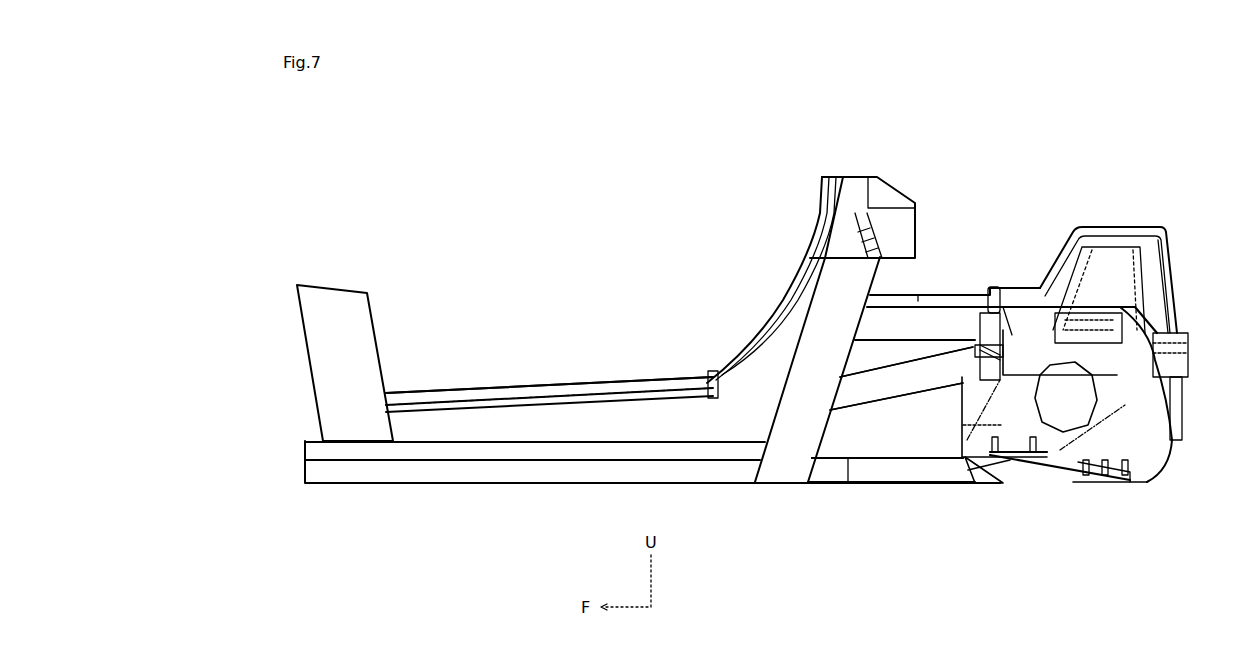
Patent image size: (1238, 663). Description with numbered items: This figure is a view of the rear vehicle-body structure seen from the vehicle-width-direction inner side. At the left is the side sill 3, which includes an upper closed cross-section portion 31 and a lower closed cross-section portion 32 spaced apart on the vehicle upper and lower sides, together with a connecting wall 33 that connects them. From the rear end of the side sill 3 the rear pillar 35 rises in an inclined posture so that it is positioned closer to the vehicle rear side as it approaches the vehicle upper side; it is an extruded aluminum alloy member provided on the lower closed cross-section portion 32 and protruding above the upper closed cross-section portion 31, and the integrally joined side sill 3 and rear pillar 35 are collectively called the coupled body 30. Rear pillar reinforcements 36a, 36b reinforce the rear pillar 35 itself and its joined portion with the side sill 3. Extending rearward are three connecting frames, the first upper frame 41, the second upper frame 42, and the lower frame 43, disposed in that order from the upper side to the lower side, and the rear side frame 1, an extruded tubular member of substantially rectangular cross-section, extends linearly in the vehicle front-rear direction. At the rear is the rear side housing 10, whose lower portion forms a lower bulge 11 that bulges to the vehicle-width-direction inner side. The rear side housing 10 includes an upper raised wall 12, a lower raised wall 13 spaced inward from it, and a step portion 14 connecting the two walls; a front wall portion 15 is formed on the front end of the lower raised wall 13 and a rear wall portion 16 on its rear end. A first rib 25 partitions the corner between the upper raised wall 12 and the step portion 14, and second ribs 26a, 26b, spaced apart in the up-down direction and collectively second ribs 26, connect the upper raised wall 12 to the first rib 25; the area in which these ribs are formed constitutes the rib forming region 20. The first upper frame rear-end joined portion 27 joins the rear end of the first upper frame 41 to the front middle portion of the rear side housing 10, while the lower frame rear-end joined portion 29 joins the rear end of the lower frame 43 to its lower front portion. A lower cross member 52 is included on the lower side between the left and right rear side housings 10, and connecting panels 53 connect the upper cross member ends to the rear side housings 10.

The rear side frame 1 is at (1073, 417).
The side sill 3 is at (590, 380).
The rear side housing 10 is at (1120, 255).
The lower bulge 11 is at (1095, 480).
The upper raised wall 12 is at (1148, 225).
The lower raised wall 13 is at (1068, 485).
The step portion 14 is at (1189, 350).
The front wall portion 15 is at (962, 425).
The rear wall portion 16 is at (1180, 415).
The rib forming region 20 is at (970, 362).
The first rib 25 is at (1017, 377).
The second rib 26 is at (957, 369).
The second rib 26a is at (973, 310).
The second rib 26b is at (975, 352).
The first upper frame rear-end joined portion 27 is at (982, 277).
The lower frame rear-end joined portion 29 is at (975, 470).
The coupled body 30 is at (652, 491).
The upper closed cross-section portion 31 is at (493, 387).
The lower closed cross-section portion 32 is at (433, 483).
The connecting wall 33 is at (528, 428).
The rear pillar 35 is at (823, 437).
The rear pillar reinforcement 36a is at (820, 237).
The rear pillar reinforcement 36b is at (762, 330).
The first upper frame 41 is at (918, 295).
The second upper frame 42 is at (868, 405).
The lower frame 43 is at (912, 484).
The lower cross member 52 is at (1022, 477).
The connecting panel 53 is at (1168, 270).